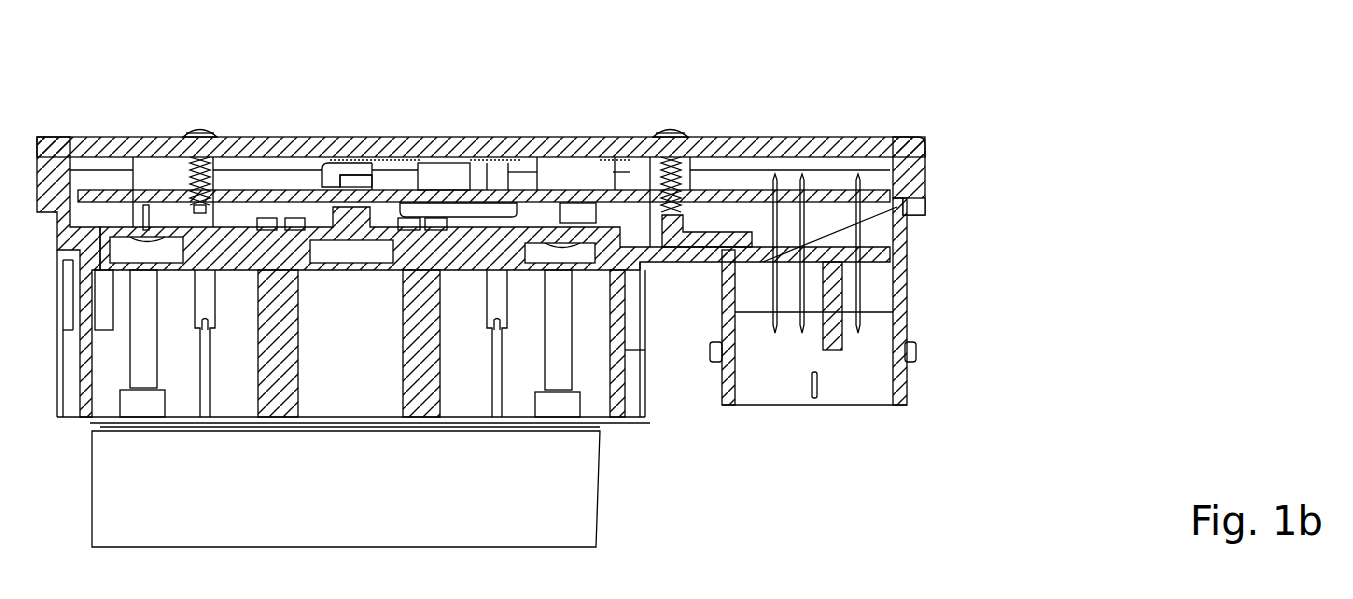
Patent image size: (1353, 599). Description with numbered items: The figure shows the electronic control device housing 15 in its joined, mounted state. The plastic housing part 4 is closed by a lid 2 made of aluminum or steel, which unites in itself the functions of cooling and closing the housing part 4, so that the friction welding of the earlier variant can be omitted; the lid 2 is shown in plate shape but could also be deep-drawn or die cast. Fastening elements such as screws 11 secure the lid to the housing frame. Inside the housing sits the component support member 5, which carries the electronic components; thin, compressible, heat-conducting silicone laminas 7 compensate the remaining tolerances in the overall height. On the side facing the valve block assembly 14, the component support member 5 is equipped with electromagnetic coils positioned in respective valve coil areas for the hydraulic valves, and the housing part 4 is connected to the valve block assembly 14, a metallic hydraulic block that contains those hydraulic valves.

The lid 2 is at (241, 138).
The housing part 4 is at (923, 192).
The component support member 5 is at (538, 190).
The silicone lamina 7 is at (446, 138).
The screw 11 is at (677, 130).
The valve block assembly 14 is at (393, 505).
The control device housing 15 is at (977, 82).